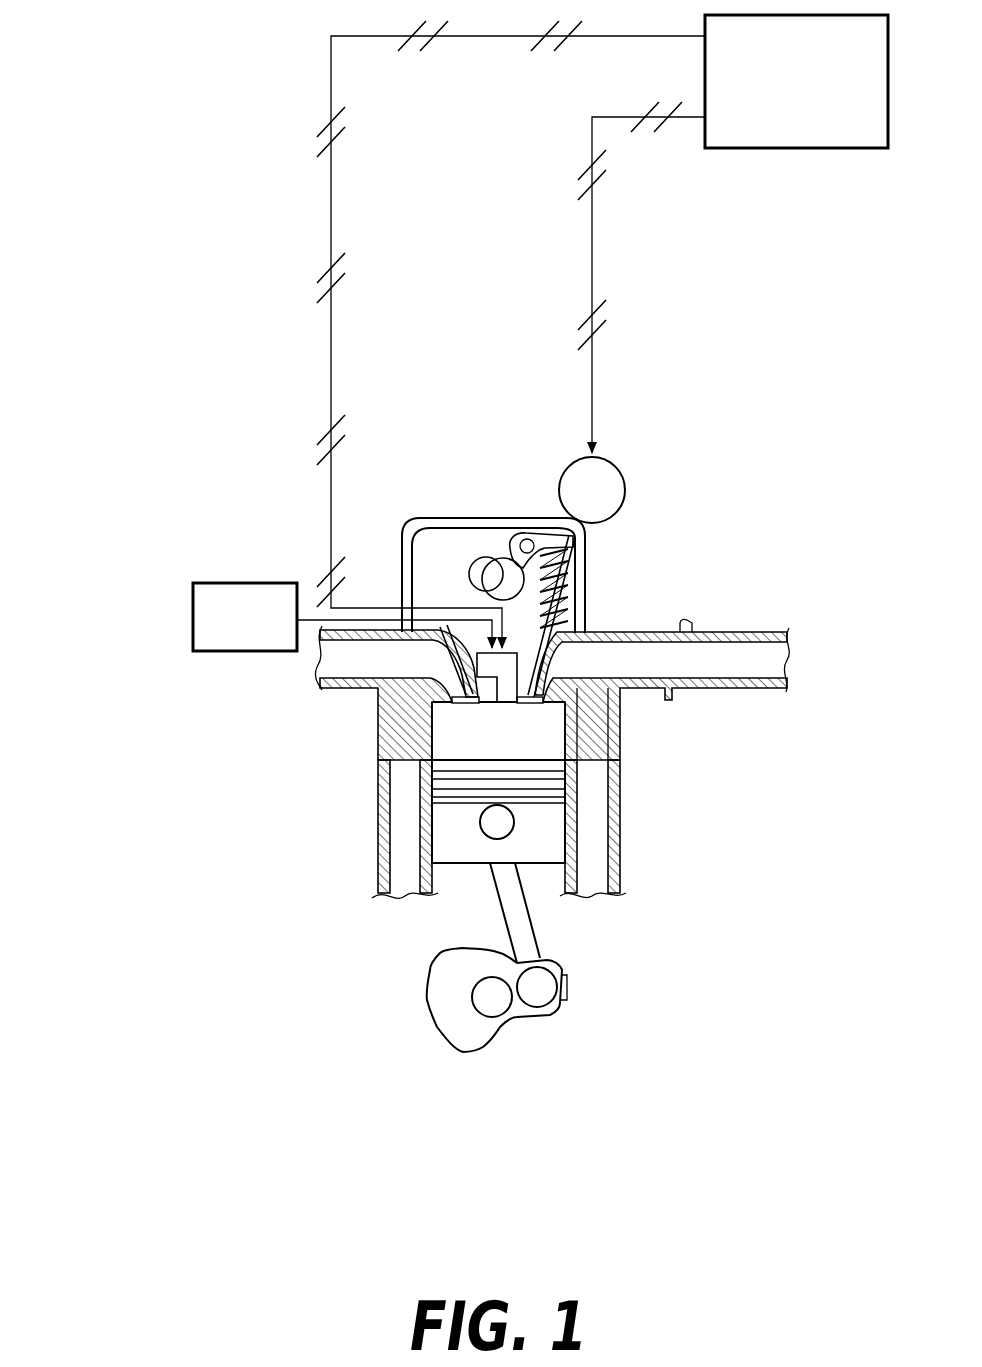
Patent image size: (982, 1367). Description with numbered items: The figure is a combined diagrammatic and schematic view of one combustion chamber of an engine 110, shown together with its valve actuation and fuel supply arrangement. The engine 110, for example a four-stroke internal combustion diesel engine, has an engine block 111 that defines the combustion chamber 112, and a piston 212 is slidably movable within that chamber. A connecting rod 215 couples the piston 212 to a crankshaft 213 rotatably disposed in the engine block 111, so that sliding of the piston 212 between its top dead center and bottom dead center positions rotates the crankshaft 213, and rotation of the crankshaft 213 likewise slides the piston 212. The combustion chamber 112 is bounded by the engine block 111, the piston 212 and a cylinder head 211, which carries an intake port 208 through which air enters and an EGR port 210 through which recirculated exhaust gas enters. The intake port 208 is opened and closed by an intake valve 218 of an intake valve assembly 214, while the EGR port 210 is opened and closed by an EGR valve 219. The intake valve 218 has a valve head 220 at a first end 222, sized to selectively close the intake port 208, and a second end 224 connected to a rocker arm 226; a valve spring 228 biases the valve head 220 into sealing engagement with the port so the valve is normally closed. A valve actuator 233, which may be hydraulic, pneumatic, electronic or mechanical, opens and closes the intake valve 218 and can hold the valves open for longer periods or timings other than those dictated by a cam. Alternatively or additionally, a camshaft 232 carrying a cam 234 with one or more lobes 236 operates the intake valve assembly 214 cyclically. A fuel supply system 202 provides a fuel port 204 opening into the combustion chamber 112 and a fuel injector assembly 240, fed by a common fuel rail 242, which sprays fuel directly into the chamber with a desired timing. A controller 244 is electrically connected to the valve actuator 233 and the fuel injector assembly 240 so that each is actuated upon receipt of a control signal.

The engine 110 is at (766, 389).
The fuel supply system 202 is at (132, 560).
The controller 244 is at (821, 96).
The common fuel rail 242 is at (270, 630).
The valve actuator 233 is at (620, 474).
The cylinder head 211 is at (392, 538).
The intake valve assembly 214 is at (598, 538).
The second end 224 is at (556, 526).
The rocker arm 226 is at (526, 533).
The valve spring 228 is at (580, 592).
The cam 234 is at (468, 573).
The camshaft 232 is at (492, 558).
The lobes 236 is at (486, 573).
The EGR port 210 is at (337, 660).
The fuel injector assembly 240 is at (442, 660).
The EGR valve 219 is at (417, 690).
The intake port 208 is at (617, 662).
The valve head 220 is at (546, 708).
The fuel port 204 is at (495, 714).
The intake valve 218 is at (615, 713).
The first end 222 is at (600, 688).
The combustion chamber 112 is at (420, 750).
The engine block 111 is at (623, 865).
The piston 212 is at (553, 825).
The connecting rod 215 is at (513, 908).
The crankshaft 213 is at (500, 1000).